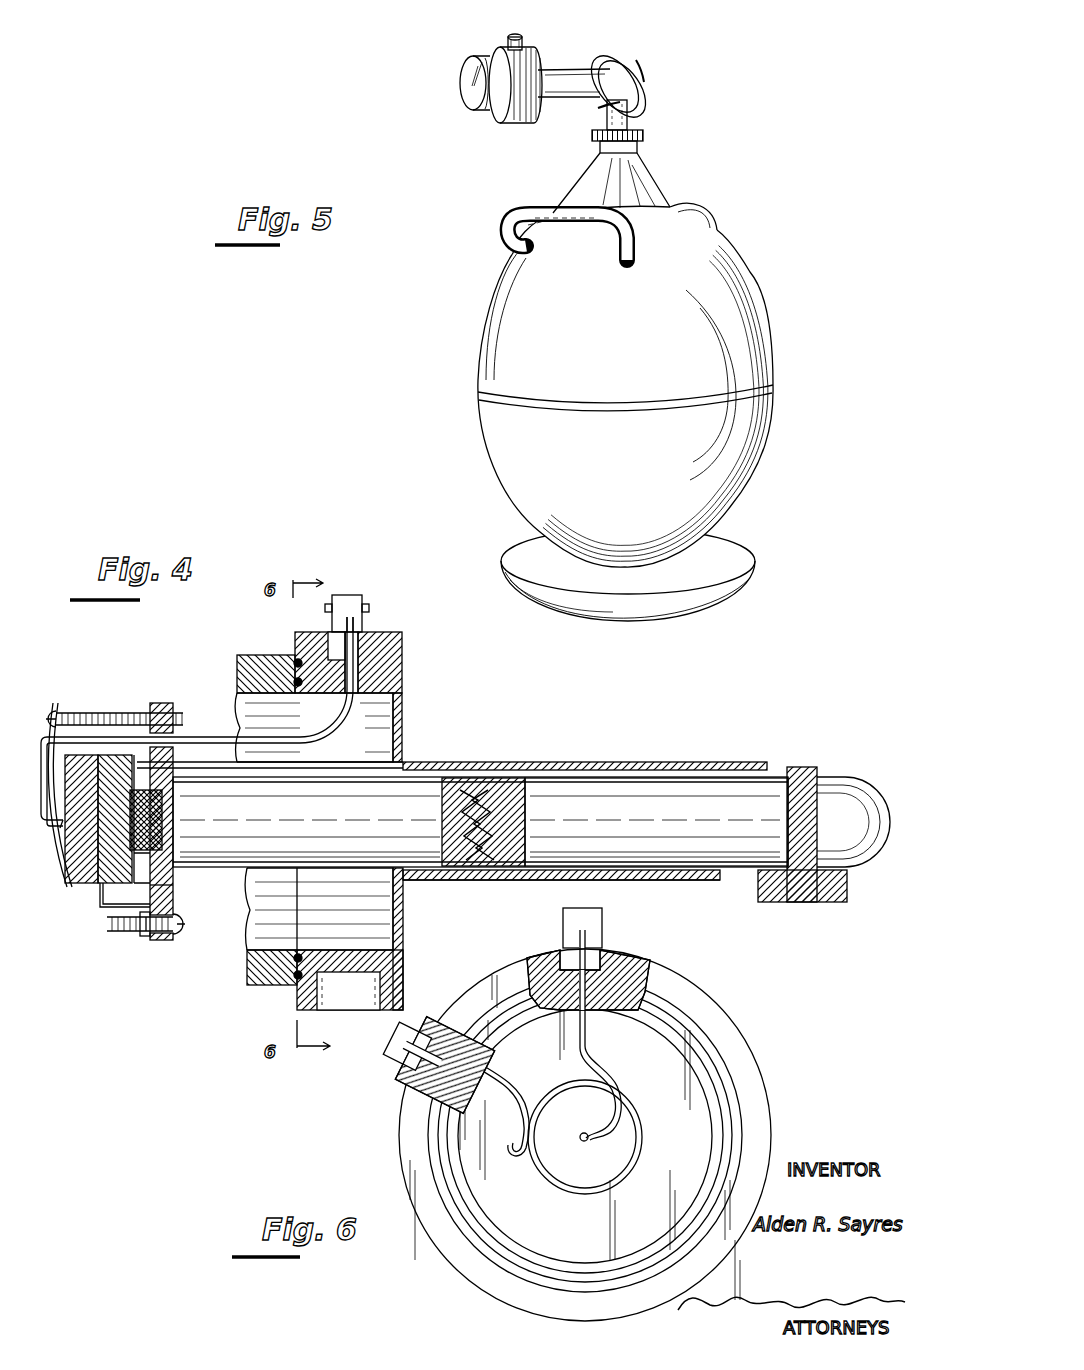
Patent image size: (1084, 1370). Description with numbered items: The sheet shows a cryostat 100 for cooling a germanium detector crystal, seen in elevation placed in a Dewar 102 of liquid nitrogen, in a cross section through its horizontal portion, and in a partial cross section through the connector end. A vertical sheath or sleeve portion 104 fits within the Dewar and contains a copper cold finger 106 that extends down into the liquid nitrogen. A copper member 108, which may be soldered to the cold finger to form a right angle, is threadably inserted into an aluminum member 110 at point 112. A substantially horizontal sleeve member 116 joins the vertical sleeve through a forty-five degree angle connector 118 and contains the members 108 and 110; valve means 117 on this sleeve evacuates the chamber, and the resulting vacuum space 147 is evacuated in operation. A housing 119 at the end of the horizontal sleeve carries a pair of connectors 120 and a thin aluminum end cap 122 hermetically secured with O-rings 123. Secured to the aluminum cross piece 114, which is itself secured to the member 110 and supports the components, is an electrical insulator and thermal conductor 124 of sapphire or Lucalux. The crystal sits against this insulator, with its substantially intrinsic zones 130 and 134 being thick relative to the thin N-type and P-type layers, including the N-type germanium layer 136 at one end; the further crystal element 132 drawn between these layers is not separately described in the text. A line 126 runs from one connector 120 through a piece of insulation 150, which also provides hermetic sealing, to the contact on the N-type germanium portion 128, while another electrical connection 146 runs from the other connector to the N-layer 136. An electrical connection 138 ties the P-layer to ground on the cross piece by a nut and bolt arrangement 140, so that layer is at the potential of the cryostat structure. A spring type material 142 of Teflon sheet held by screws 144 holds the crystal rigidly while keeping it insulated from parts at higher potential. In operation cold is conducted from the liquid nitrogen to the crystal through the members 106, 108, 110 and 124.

In FIG. 5, the cryostat 100 is at (565, 91).
In FIG. 5, the Dewar 102 is at (762, 262).
In FIG. 5, the sheath or sleeve portion 104 is at (628, 116).
In FIG. 4, the copper cold finger 106 is at (800, 900).
In FIG. 4, the copper member 108 is at (656, 822).
In FIG. 4, the aluminum member 110 is at (480, 822).
In FIG. 4, the threaded insertion point 112 is at (508, 823).
In FIG. 4, the cross piece 114 is at (162, 705).
In FIG. 5, the horizontal sleeve member 116 is at (568, 97).
In FIG. 4, the horizontal sleeve member 116 is at (470, 762).
In FIG. 6, the horizontal sleeve member 116 is at (632, 1104).
In FIG. 4, the valve means 117 is at (345, 1012).
In FIG. 5, the 45° angle connector 118 is at (612, 64).
In FIG. 5, the housing 119 is at (508, 122).
In FIG. 4, the housing 119 is at (402, 632).
In FIG. 6, the housing 119 is at (705, 990).
In FIG. 5, the connectors 120 is at (508, 38).
In FIG. 4, the connectors 120 is at (352, 595).
In FIG. 6, the connectors 120 is at (608, 933).
In FIG. 5, the end cap 122 is at (460, 82).
In FIG. 4, the end cap 122 is at (248, 655).
In FIG. 4, the O-rings 123 is at (294, 668).
In FIG. 4, the electrical insulator and thermal conductor 124 is at (165, 808).
In FIG. 4, the line 126 is at (336, 745).
In FIG. 6, the line 126 is at (588, 1045).
In FIG. 4, the N-type germanium portion 128 is at (143, 877).
In FIG. 4, the substantially intrinsic zone 130 is at (120, 755).
In FIG. 4, the plate 132 is at (94, 890).
In FIG. 4, the substantially intrinsic zone 134 is at (90, 755).
In FIG. 4, the N-type germanium layer 136 is at (58, 872).
In FIG. 4, the electrical connection 138 is at (118, 933).
In FIG. 4, the nut and bolt arrangement 140 is at (183, 949).
In FIG. 4, the spring type material 142 is at (66, 908).
In FIG. 4, the screws 144 is at (68, 712).
In FIG. 4, the electrical connection 146 is at (270, 745).
In FIG. 6, the electrical connection 146 is at (522, 1088).
In FIG. 4, the vacuum space 147 is at (447, 880).
In FIG. 4, the insulation 150 is at (356, 672).
In FIG. 6, the insulation 150 is at (550, 952).